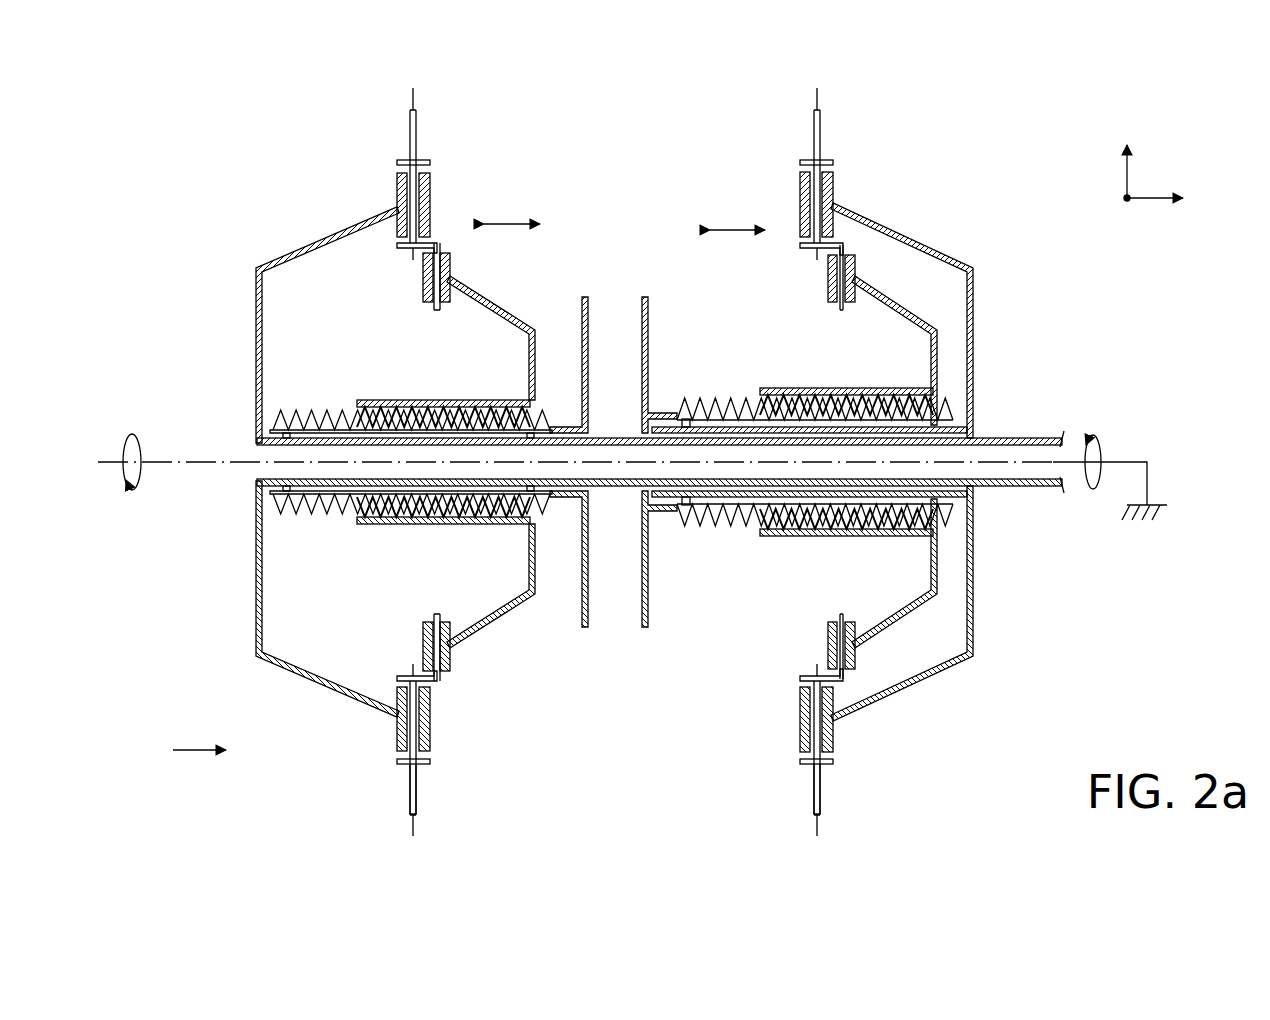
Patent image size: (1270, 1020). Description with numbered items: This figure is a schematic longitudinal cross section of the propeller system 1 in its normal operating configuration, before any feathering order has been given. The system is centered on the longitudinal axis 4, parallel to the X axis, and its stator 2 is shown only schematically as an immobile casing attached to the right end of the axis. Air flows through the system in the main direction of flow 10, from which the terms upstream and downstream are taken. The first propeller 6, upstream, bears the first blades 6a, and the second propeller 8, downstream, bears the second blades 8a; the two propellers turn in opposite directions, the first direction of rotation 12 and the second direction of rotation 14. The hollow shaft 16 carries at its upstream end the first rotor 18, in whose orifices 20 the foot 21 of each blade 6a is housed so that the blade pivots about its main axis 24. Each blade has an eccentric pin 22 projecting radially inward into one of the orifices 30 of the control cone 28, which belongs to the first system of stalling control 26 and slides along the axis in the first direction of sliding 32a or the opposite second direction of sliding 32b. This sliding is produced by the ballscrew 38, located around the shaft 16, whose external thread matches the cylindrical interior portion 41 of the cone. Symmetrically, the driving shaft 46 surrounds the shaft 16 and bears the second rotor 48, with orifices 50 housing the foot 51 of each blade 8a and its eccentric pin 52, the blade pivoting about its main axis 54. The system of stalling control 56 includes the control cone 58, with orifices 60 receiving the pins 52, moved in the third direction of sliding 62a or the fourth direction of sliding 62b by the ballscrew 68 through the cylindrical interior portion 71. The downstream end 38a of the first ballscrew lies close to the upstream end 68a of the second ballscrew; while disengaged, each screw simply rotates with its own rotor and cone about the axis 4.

The propeller system 1 is at (1010, 138).
The stator 2 is at (1150, 485).
The longitudinal axis 4 is at (108, 462).
The first propeller 6 is at (403, 786).
The first propeller blades 6a is at (418, 780).
The second propeller 8 is at (805, 786).
The second propeller blades 8a is at (822, 780).
The main direction of flow 10 is at (197, 750).
The first direction of rotation 12 is at (138, 434).
The second direction of rotation 14 is at (1100, 440).
The hollow shaft 16 is at (335, 450).
The first rotor 18 is at (287, 262).
The orifices 20 is at (403, 190).
The foot 21 is at (398, 670).
The eccentric pin 22 is at (437, 618).
The main axis of the blade 24 is at (413, 95).
The first system of stalling control 26 is at (541, 392).
The control cone 28 is at (505, 298).
The orifices 30 is at (423, 276).
The first direction of sliding 32a is at (490, 222).
The second direction of sliding 32b is at (535, 222).
The ballscrew 38 is at (283, 428).
The downstream end of the first ballscrew 38a is at (588, 413).
The cylindrical interior portion 41 is at (385, 400).
The driving shaft 46 is at (658, 425).
The second rotor 48 is at (945, 250).
The orifices 50 is at (823, 190).
The foot 51 is at (800, 670).
The eccentric pin 52 is at (840, 618).
The main axis of the blade 54 is at (817, 95).
The system of stalling control 56 is at (905, 333).
The control cone 58 is at (878, 290).
The orifices 60 is at (828, 285).
The third direction of sliding 62a is at (715, 228).
The fourth direction of sliding 62b is at (760, 228).
The ballscrew 68 is at (752, 398).
The upstream end of the second ballscrew 68a is at (650, 357).
The cylindrical interior portion 71 is at (800, 388).